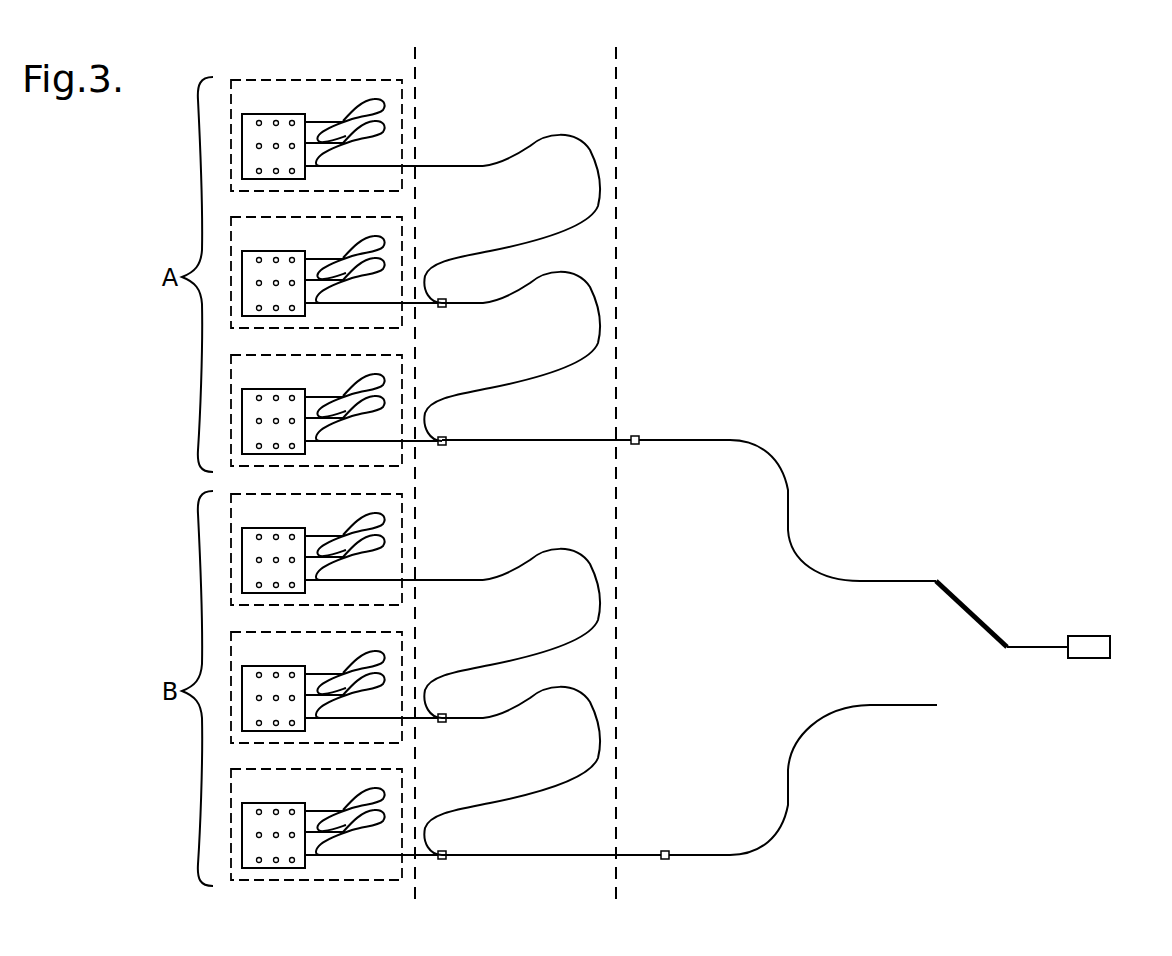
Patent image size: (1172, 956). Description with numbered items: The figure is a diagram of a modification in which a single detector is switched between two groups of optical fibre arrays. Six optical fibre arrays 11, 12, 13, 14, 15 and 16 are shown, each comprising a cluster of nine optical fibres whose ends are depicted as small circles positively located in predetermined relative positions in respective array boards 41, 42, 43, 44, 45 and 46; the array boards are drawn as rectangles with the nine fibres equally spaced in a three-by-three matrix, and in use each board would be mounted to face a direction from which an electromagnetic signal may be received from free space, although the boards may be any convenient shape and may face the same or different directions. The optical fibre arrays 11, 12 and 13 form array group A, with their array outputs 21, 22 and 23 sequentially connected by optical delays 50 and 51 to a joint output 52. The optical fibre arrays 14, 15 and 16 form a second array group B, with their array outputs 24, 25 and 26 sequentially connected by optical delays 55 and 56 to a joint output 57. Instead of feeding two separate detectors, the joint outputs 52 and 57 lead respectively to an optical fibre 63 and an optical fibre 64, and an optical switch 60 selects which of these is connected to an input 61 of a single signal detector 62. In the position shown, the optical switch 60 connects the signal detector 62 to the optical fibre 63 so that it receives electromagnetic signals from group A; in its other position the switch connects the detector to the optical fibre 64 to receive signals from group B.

The optical fibre array 11 is at (270, 135).
The optical fibre array 12 is at (271, 272).
The optical fibre array 13 is at (275, 410).
The optical fibre array 14 is at (272, 549).
The optical fibre array 15 is at (276, 687).
The optical fibre array 16 is at (275, 824).
The array output 21 is at (447, 165).
The array output 22 is at (434, 308).
The array output 23 is at (434, 446).
The array output 24 is at (428, 586).
The array output 25 is at (434, 724).
The array output 26 is at (448, 860).
The array board 41 is at (248, 137).
The array board 42 is at (223, 278).
The array board 43 is at (227, 421).
The array board 44 is at (224, 560).
The array board 45 is at (228, 688).
The array board 46 is at (227, 835).
The optical delay 50 is at (600, 185).
The optical delay 51 is at (600, 321).
The joint output 52 is at (565, 438).
The optical delay 55 is at (600, 602).
The optical delay 56 is at (600, 740).
The joint output 57 is at (555, 856).
The optical switch 60 is at (968, 604).
The input 61 is at (1033, 645).
The signal detector 62 is at (1097, 636).
The optical fibre 63 is at (790, 517).
The optical fibre 64 is at (803, 735).